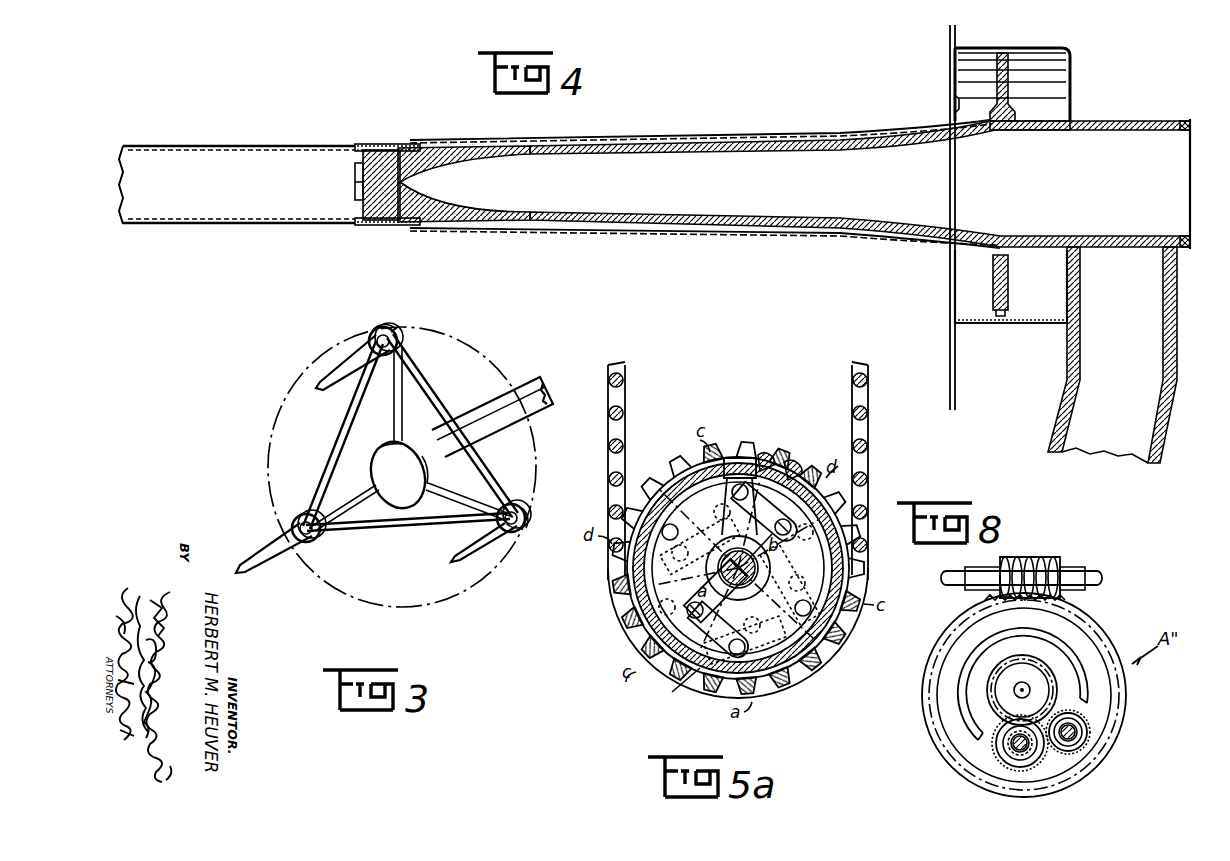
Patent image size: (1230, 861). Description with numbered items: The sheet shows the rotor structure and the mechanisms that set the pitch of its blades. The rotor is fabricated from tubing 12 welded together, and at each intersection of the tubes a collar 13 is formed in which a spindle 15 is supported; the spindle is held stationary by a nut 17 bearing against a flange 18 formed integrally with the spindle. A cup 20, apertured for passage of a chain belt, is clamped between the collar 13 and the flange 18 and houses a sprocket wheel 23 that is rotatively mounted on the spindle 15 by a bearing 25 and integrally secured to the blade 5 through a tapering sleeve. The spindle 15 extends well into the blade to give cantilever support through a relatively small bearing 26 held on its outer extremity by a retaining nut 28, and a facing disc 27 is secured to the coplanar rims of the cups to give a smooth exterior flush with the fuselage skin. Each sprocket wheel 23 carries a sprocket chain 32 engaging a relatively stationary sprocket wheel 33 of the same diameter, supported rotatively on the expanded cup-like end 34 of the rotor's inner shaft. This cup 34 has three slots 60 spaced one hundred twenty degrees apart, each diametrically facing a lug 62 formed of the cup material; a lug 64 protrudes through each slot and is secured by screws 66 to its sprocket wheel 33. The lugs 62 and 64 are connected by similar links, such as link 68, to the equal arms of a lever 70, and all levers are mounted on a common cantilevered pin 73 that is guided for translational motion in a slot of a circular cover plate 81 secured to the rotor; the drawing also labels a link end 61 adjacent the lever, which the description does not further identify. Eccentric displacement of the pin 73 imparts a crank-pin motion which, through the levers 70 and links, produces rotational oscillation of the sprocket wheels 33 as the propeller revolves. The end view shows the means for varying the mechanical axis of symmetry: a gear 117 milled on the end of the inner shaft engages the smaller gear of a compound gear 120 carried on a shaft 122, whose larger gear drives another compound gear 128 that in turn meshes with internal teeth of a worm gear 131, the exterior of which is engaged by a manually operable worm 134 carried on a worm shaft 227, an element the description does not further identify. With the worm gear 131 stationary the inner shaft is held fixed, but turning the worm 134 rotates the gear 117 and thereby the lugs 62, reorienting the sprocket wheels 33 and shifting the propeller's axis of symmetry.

In FIG. 4, the blade 5 is at (276, 146).
In FIG. 4, the tubing 12 is at (1068, 378).
In FIG. 3, the tubing 12 is at (442, 381).
In FIG. 4, the collar 13 is at (1149, 116).
In FIG. 3, the collar 13 is at (402, 328).
In FIG. 4, the spindle 15 is at (628, 213).
In FIG. 3, the spindle 15 is at (350, 360).
In FIG. 4, the nut 17 is at (1178, 247).
In FIG. 4, the flange 18 is at (1054, 252).
In FIG. 4, the cup 20 is at (1042, 40).
In FIG. 3, the cup 20 is at (376, 339).
In FIG. 4, the sprocket wheel 23 is at (1010, 90).
In FIG. 4, the bearing 25 is at (1028, 130).
In FIG. 4, the bearing 26 is at (360, 157).
In FIG. 4, the facing disc 27 is at (950, 97).
In FIG. 3, the facing disc 27 is at (454, 597).
In FIG. 4, the retaining nut 28 is at (355, 196).
In FIG. 5A, the sprocket chain 32 is at (870, 432).
In FIG. 5A, the sprocket wheel 33 is at (793, 460).
In FIG. 5A, the expanded cup-like end 34 is at (630, 640).
In FIG. 5A, the slot 60 is at (676, 458).
In FIG. 5A, the arm 61 is at (714, 636).
In FIG. 5A, the lug 62 is at (688, 690).
In FIG. 5A, the lug or tongue 64 is at (762, 455).
In FIG. 5A, the screws 66 is at (743, 456).
In FIG. 5A, the link 68 is at (758, 510).
In FIG. 5A, the lever 70 is at (713, 549).
In FIG. 5A, the cantilevered pin or shaft 73 is at (772, 566).
In FIG. 3, the circular cover plate 81 is at (374, 474).
In FIG. 8, the gear 117 is at (1042, 655).
In FIG. 8, the compound gear 120 is at (1000, 750).
In FIG. 8, the shaft 122 is at (1015, 752).
In FIG. 8, the compound gear 128 is at (1088, 738).
In FIG. 8, the worm gear 131 is at (1095, 640).
In FIG. 8, the worm 134 is at (1040, 566).
In FIG. 8, the shaft 227 is at (1088, 570).